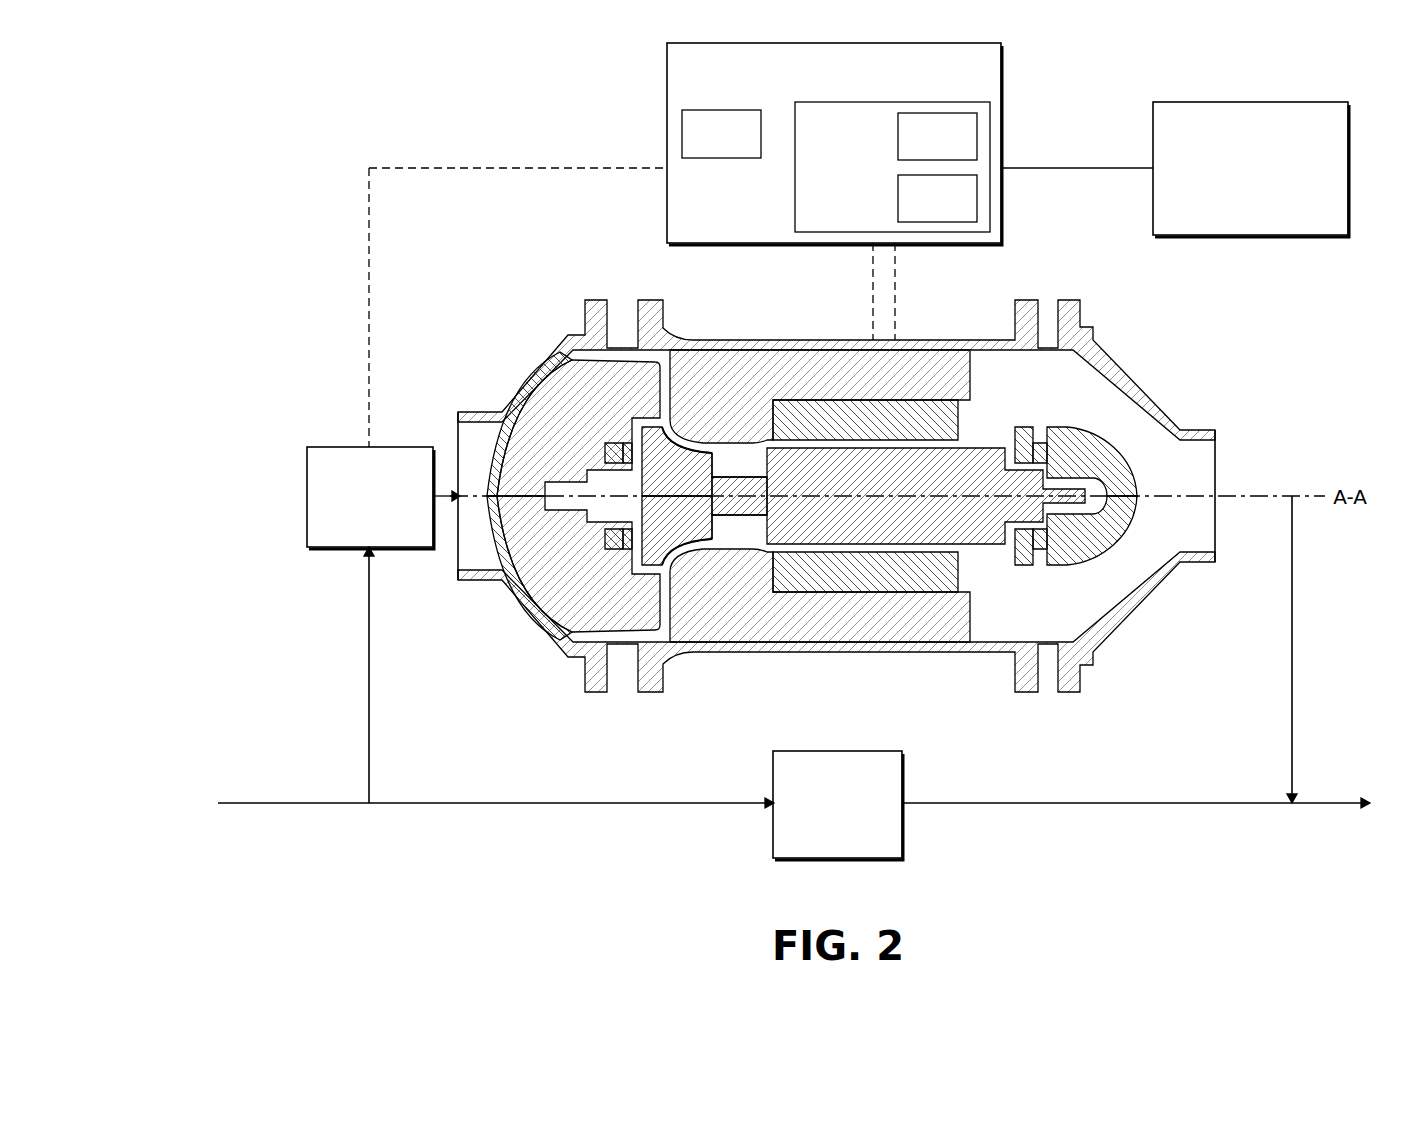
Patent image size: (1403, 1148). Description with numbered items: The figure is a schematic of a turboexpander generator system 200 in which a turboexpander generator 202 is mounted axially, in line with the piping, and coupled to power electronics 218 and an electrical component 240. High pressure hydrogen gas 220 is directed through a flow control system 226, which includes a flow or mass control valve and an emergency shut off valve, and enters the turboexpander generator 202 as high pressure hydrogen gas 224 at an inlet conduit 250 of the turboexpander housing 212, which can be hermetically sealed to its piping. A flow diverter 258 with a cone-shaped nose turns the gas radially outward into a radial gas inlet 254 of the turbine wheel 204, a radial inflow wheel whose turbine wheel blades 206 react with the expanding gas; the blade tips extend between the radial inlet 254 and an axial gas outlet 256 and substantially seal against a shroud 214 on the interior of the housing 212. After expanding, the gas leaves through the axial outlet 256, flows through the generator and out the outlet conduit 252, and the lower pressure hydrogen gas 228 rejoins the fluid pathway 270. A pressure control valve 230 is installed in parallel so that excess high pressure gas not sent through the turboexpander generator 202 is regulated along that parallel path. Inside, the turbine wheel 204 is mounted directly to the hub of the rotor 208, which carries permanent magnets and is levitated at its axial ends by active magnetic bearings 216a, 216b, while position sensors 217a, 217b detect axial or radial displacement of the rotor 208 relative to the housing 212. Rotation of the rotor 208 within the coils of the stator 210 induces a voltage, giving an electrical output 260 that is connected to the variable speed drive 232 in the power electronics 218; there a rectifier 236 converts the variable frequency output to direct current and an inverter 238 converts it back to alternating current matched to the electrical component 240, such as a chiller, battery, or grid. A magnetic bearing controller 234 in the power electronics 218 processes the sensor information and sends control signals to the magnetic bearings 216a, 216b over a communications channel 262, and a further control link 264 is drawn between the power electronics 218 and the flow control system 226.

The turboexpander generator system 200 is at (256, 145).
The turboexpander generator 202 is at (506, 343).
The turbine wheel 204 is at (649, 557).
The turbine wheel blades 206 is at (698, 545).
The rotor 208 is at (975, 535).
The stator 210 is at (846, 433).
The turboexpander housing 212 is at (923, 652).
The shroud 214 is at (685, 555).
The active magnetic bearing 216a is at (615, 543).
The position sensor 217a is at (628, 548).
The active magnetic bearing 216b is at (1023, 453).
The position sensor 217b is at (1043, 447).
The power electronics 218 is at (847, 88).
The high pressure hydrogen gas 220 is at (297, 806).
The high pressure hydrogen gas 224 is at (369, 648).
The flow control system 226 is at (349, 535).
The lower pressure hydrogen gas 228 is at (1292, 648).
The pressure control valve 230 is at (817, 845).
The variable speed drive 232 is at (812, 150).
The magnetic bearing controller 234 is at (699, 148).
The rectifier 236 is at (916, 212).
The inverter 238 is at (916, 152).
The electrical component 240 is at (1229, 185).
The inlet conduit 250 is at (458, 436).
The outlet conduit 252 is at (1215, 465).
The radial gas inlet 254 is at (672, 396).
The axial gas outlet 256 is at (723, 457).
The flow diverter 258 is at (587, 370).
The electrical output 260 is at (897, 292).
The communications channel 262 is at (870, 292).
The control signal line 264 is at (510, 166).
The fluid pathway 270 is at (1105, 806).